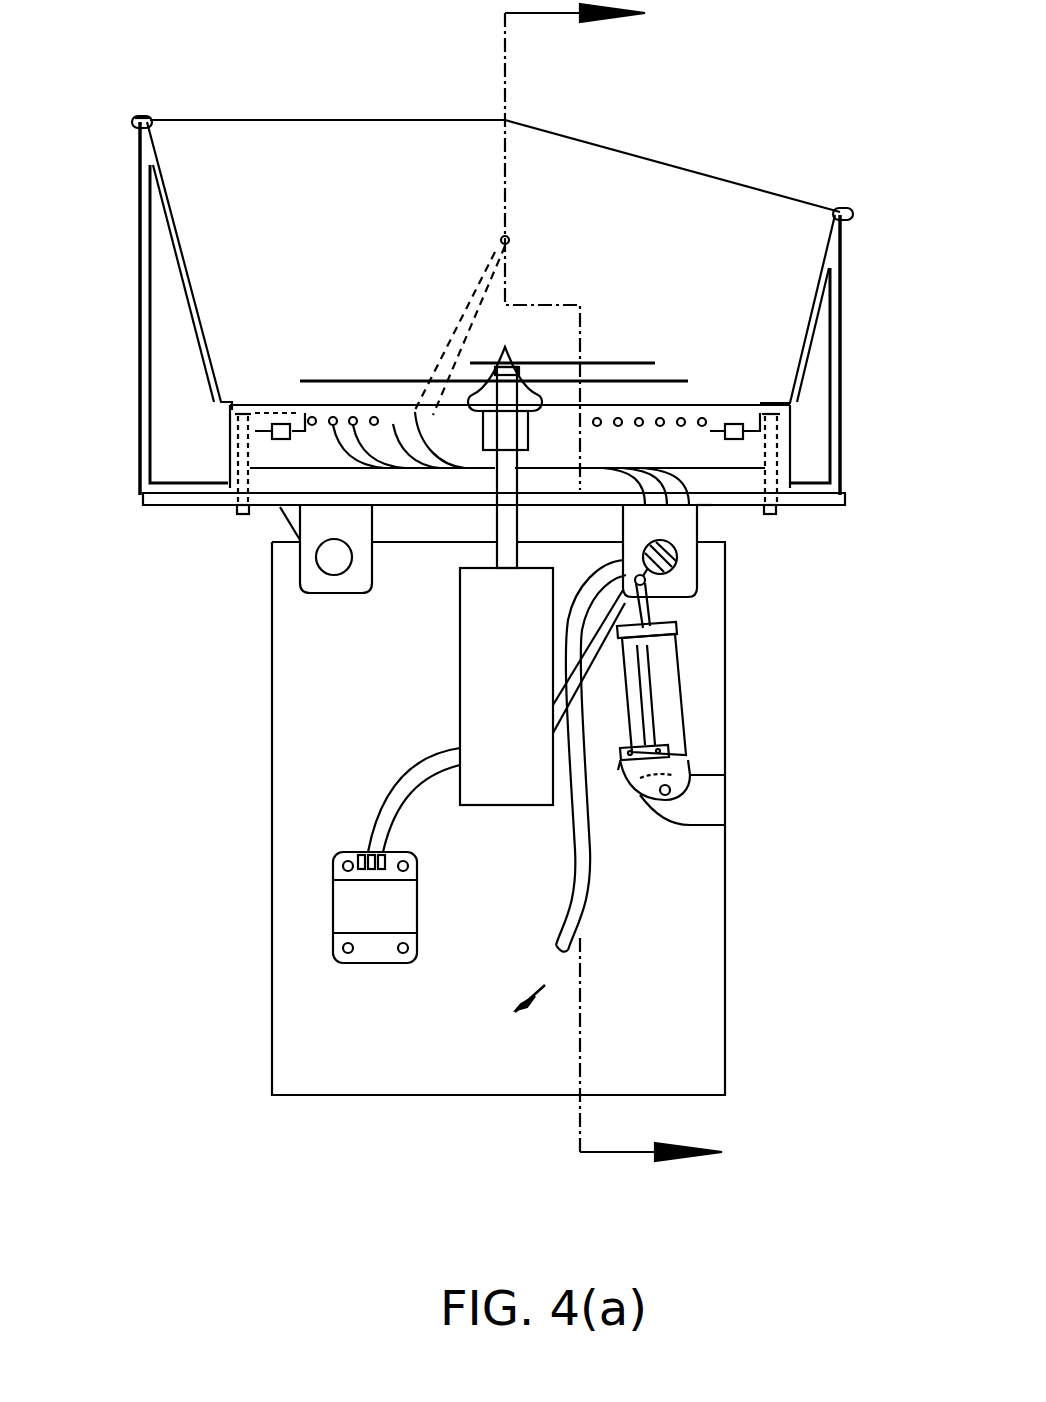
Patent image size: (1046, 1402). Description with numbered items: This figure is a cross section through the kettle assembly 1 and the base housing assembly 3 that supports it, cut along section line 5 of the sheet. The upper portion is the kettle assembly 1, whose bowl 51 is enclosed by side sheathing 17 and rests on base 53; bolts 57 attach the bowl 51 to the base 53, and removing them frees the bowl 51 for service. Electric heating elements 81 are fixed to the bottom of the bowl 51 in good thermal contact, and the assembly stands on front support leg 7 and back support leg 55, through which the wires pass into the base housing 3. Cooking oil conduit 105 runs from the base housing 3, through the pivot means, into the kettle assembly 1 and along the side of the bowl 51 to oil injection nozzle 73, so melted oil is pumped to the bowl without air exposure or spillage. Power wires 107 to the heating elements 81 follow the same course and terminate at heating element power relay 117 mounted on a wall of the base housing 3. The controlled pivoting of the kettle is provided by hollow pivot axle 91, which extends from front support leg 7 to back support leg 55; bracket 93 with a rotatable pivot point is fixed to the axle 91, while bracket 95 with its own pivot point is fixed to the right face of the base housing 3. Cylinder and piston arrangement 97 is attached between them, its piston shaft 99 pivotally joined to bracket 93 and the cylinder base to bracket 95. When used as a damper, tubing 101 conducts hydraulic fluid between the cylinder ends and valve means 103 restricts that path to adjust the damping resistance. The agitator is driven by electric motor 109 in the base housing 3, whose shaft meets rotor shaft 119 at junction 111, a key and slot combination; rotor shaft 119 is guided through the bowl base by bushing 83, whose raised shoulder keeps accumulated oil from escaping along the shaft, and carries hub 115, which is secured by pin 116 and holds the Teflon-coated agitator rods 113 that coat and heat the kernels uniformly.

The kettle assembly 1 is at (362, 213).
The base housing assembly 3 is at (362, 698).
The section line 5 is at (613, 582).
The front support leg 7 is at (684, 520).
The side sheathing 17 is at (138, 298).
The bowl 51 is at (165, 128).
The base 53 is at (140, 497).
The back support leg 55 is at (703, 510).
The bolts 57 is at (243, 517).
The oil injection nozzle 73 is at (498, 240).
The electric heating elements 81 is at (315, 418).
The bushing 83 is at (528, 431).
The hollow pivot axle 91 is at (680, 558).
The bracket 93 is at (693, 588).
The bracket 95 is at (712, 798).
The cylinder and piston arrangement 97 is at (685, 690).
The piston shaft 99 is at (655, 618).
The tubing 101 is at (690, 722).
The valve means 103 is at (618, 770).
The cooking oil conduit 105 is at (403, 381).
The power wires 107 is at (343, 450).
The electric motor 109 is at (540, 683).
The junction 111 is at (495, 521).
The agitator rods 113 is at (315, 380).
The hub 115 is at (507, 352).
The pin 116 is at (468, 333).
The heating element power relay 117 is at (400, 921).
The rotor shaft 119 is at (528, 490).